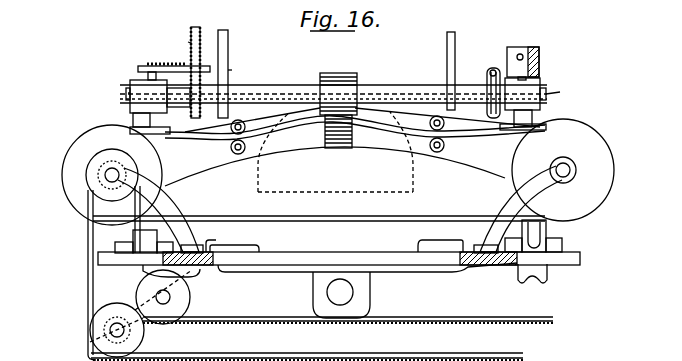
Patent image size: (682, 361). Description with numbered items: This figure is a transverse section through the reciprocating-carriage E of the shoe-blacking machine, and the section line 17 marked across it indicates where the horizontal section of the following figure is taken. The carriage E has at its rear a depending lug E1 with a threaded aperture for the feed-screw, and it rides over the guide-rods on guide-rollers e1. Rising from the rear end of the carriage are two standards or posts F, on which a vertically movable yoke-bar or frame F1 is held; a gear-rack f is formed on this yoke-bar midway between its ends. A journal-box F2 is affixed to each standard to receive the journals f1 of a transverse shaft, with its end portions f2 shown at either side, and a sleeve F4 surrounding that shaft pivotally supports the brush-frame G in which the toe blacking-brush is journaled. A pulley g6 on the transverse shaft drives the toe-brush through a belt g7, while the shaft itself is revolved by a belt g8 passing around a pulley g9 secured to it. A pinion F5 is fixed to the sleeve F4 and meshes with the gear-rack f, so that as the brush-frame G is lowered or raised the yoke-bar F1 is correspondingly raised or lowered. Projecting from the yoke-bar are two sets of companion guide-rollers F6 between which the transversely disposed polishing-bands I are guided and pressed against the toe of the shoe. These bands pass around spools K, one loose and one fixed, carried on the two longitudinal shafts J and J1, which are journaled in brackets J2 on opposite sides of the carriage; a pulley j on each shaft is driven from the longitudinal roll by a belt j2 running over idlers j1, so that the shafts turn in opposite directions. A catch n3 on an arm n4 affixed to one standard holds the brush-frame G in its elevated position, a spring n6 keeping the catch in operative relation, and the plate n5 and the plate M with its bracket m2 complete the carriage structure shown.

The section line 17- 17 is at (75, 98).
The standards or posts F is at (130, 117).
The yoke-bar or frame F1 is at (296, 149).
The journal-box F2 is at (135, 86).
The sleeve F4 is at (293, 85).
The pinion F5 is at (347, 74).
The companion guide-rollers F6 is at (240, 154).
The gear-rack f is at (343, 150).
The journals f1 is at (546, 93).
The shaft end f2 is at (128, 93).
The brush-frame G is at (228, 54).
The pulley g6 is at (200, 139).
The belt g7 is at (190, 43).
The belt g8 is at (493, 68).
The pulley g9 is at (487, 73).
The catch n3 is at (230, 67).
The arm n4 is at (174, 76).
The rack plate n5 is at (198, 48).
The spring n6 is at (165, 63).
The polishing-bands I is at (341, 219).
The longitudinal shaft J is at (576, 171).
The longitudinal shaft J1 is at (106, 177).
The brackets J2 is at (169, 212).
The pulley j is at (86, 222).
The idlers j1 is at (190, 300).
The belt j2 is at (311, 322).
The spools K is at (76, 201).
The plate M is at (221, 242).
The bracket m2 is at (262, 244).
The reciprocating-carriage E is at (445, 281).
The depending lug E1 is at (311, 292).
The guide-rollers e1 is at (549, 274).